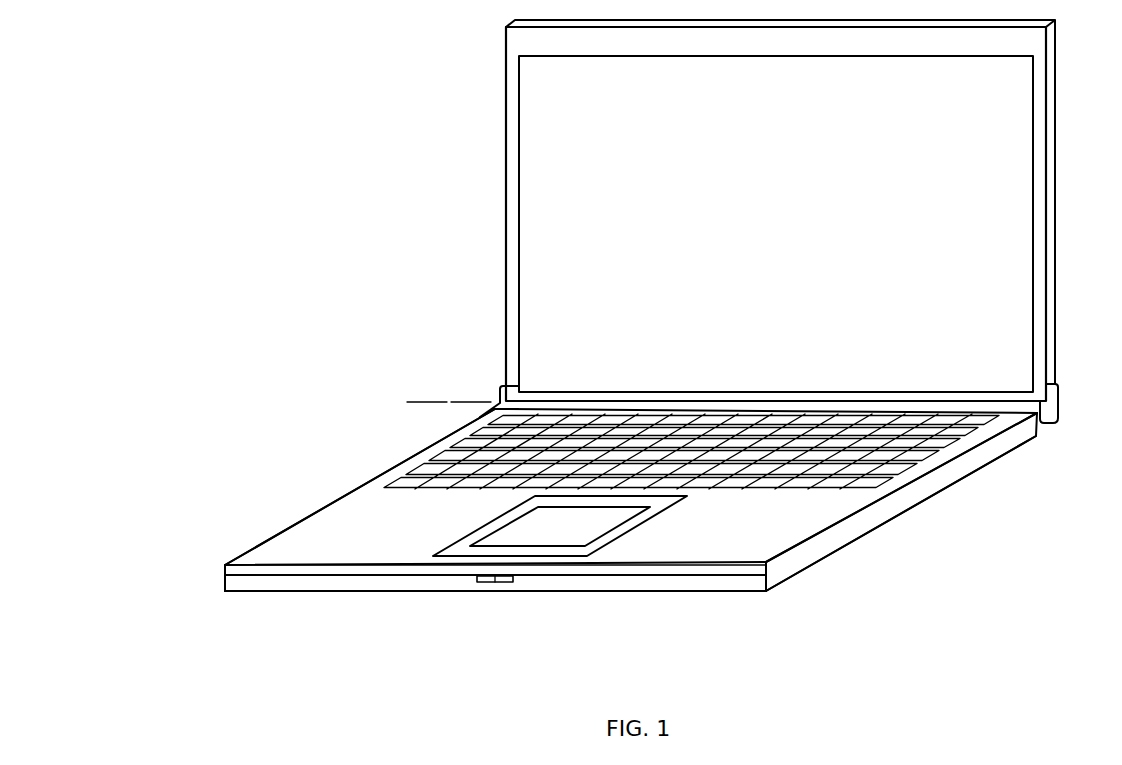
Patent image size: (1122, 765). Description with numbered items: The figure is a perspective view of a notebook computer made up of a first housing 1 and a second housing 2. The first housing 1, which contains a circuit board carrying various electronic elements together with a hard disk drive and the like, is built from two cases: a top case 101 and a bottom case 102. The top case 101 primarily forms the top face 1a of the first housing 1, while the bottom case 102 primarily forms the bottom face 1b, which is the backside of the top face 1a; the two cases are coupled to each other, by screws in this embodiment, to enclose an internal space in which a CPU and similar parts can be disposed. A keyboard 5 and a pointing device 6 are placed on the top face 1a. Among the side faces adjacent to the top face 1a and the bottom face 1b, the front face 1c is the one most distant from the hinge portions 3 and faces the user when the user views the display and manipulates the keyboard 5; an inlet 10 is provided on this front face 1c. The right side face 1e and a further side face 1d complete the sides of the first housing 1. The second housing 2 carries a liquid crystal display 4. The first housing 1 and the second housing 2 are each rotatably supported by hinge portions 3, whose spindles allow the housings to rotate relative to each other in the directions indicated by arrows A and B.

The first housing 1 is at (978, 458).
The top face 1a is at (355, 521).
The bottom face 1b is at (636, 597).
The front face 1c is at (700, 582).
The left side surface of main body 1d is at (218, 575).
The right side face 1e is at (828, 549).
The second housing 2 is at (510, 260).
The hinge portions 3 is at (503, 398).
The liquid crystal display 4 is at (545, 118).
The keyboard 5 is at (462, 440).
The pointing device 6 is at (548, 533).
The inlet 10 is at (495, 585).
The top case 101 is at (237, 563).
The bottom case 102 is at (243, 583).
The arrow A is at (445, 411).
The arrow B is at (412, 415).